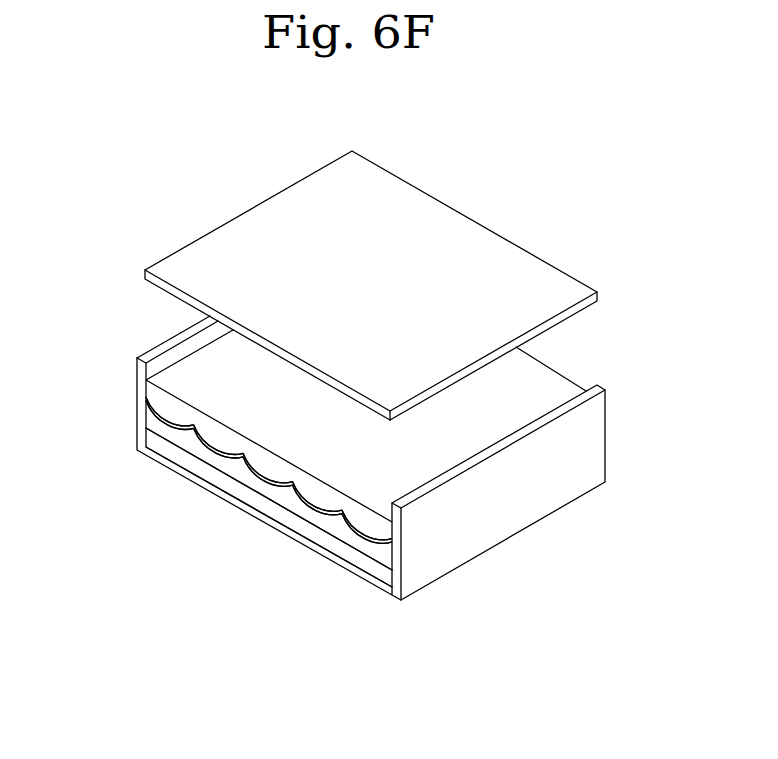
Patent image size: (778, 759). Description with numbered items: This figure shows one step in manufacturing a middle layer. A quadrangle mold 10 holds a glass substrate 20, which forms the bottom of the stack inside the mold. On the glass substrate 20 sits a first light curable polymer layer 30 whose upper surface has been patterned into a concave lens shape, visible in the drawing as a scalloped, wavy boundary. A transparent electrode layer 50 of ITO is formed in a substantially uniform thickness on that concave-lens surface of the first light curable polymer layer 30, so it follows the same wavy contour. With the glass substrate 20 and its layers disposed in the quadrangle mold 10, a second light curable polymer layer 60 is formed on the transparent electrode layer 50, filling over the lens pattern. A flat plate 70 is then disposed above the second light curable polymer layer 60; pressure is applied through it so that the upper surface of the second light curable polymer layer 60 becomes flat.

The quadrangle mold 10 is at (597, 452).
The glass substrate 20 is at (153, 441).
The first light curable polymer layer 30 is at (153, 417).
The transparent electrode layer 50 is at (208, 447).
The second light curable polymer layer 60 is at (153, 390).
The flat plate 70 is at (598, 297).